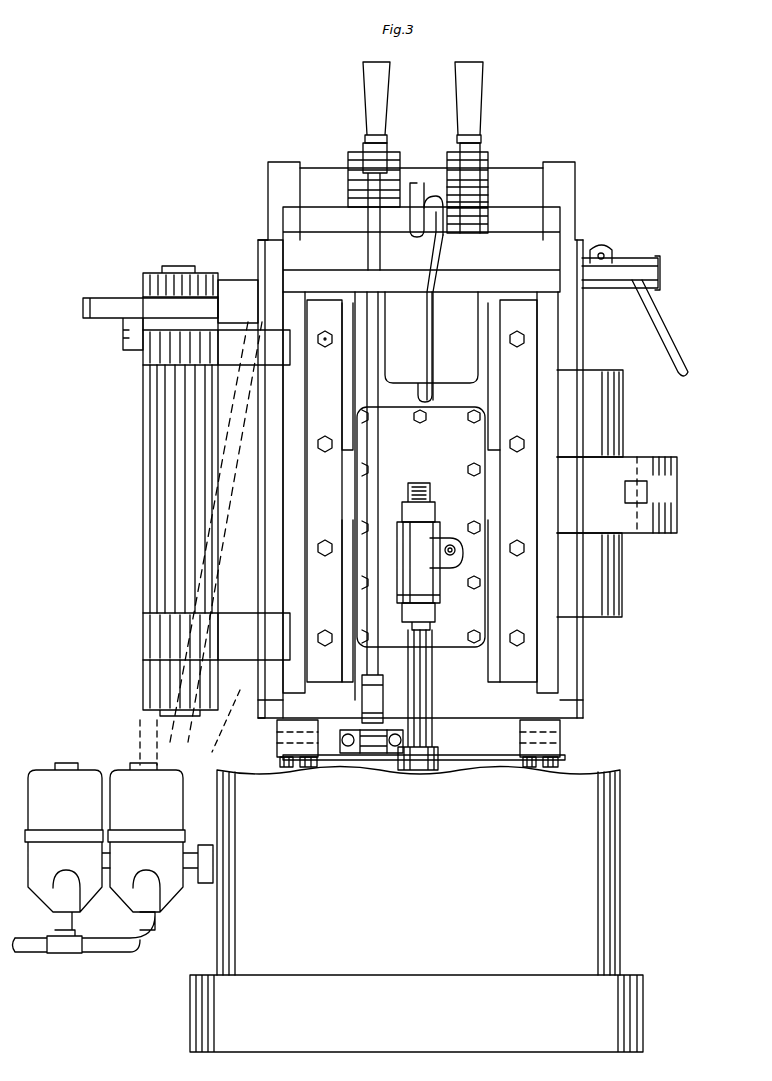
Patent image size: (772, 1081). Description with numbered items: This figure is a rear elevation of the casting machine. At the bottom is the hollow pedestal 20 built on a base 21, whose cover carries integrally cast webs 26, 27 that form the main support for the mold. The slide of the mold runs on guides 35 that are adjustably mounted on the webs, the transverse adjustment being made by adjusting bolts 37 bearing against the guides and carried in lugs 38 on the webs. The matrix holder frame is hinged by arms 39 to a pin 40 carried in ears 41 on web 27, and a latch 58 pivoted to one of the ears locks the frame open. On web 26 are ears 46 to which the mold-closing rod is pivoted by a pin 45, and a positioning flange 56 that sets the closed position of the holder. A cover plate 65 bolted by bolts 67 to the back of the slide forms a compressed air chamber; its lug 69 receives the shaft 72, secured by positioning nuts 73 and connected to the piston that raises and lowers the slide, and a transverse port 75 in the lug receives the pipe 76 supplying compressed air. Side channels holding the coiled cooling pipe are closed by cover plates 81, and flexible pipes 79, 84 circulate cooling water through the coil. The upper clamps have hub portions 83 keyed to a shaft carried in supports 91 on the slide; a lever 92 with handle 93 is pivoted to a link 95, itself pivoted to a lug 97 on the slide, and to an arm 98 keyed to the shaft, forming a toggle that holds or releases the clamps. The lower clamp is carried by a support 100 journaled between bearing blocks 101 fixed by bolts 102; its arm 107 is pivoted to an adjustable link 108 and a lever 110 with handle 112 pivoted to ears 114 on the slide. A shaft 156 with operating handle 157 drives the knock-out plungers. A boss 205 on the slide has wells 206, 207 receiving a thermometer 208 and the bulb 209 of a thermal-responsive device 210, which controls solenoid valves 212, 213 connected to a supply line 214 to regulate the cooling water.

The hollow pedestal 20 is at (612, 875).
The base 21 is at (290, 1045).
The web 26 is at (553, 425).
The web 27 is at (290, 430).
The guides 35 is at (347, 678).
The adjusting bolts 37 is at (325, 349).
The lugs 38 is at (325, 676).
The arms 39 is at (232, 284).
The pin 40 is at (180, 272).
The ears 41 is at (230, 367).
The pin 45 is at (645, 460).
The ears 46 is at (678, 470).
The positioning flange 56 is at (622, 585).
The latch 58 is at (105, 303).
The cover plate 65 is at (456, 642).
The bolts 67 is at (472, 466).
The lug 69 is at (440, 575).
The shaft 72 is at (432, 700).
The positioning nuts 73 is at (404, 509).
The transverse port 75 is at (450, 544).
The pipe 76 is at (456, 550).
The flexible pipe 79 is at (256, 321).
The cover plates 81 is at (263, 498).
The hub portions 83 is at (283, 166).
The flexible pipe 84 is at (246, 690).
The supports 91 is at (322, 176).
The lever 92 is at (470, 148).
The handle 93 is at (476, 108).
The link 95 is at (488, 193).
The lug 97 is at (490, 226).
The arm 98 is at (486, 165).
The support 100 is at (487, 759).
The bearing blocks 101 is at (277, 752).
The bolts 102 is at (306, 770).
The arm 107 is at (383, 760).
The adjustable link 108 is at (378, 473).
The lever 110 is at (384, 150).
The handle 112 is at (383, 108).
The ears 114 is at (400, 163).
The shaft 156 is at (660, 273).
The operating handle 157 is at (673, 358).
The boss 205 is at (408, 280).
The well 206 is at (410, 226).
The well 207 is at (430, 212).
The thermometer 208 is at (413, 190).
The bulb 209 is at (437, 265).
The thermal-responsive device 210 is at (431, 347).
The solenoid valve 212 is at (38, 773).
The solenoid valve 213 is at (169, 780).
The supply line 214 is at (105, 956).